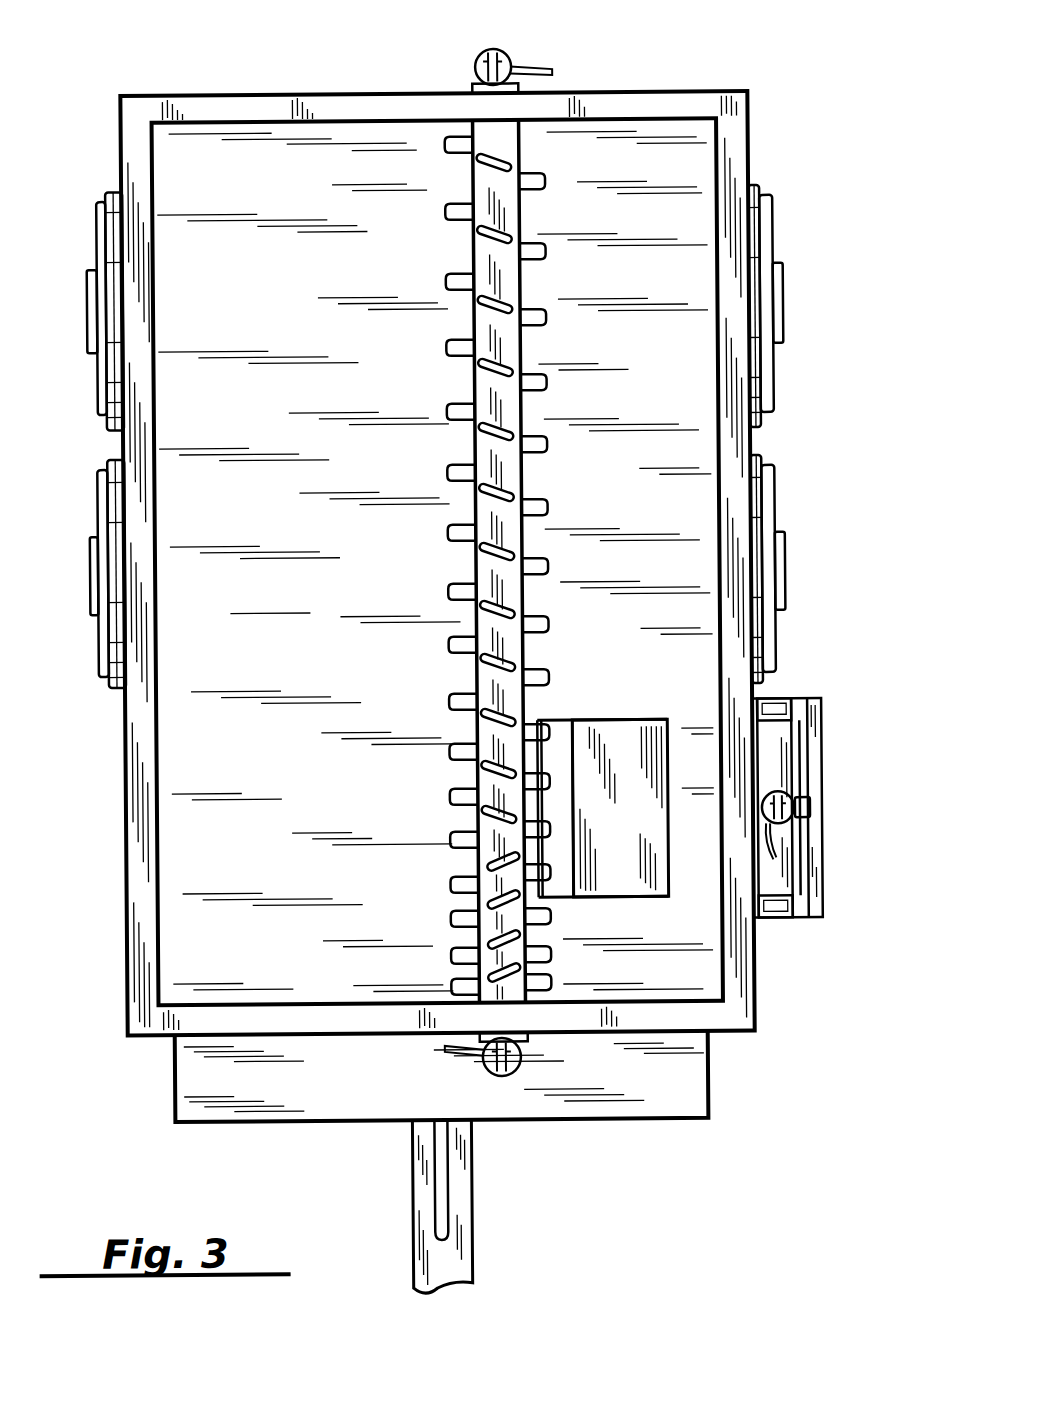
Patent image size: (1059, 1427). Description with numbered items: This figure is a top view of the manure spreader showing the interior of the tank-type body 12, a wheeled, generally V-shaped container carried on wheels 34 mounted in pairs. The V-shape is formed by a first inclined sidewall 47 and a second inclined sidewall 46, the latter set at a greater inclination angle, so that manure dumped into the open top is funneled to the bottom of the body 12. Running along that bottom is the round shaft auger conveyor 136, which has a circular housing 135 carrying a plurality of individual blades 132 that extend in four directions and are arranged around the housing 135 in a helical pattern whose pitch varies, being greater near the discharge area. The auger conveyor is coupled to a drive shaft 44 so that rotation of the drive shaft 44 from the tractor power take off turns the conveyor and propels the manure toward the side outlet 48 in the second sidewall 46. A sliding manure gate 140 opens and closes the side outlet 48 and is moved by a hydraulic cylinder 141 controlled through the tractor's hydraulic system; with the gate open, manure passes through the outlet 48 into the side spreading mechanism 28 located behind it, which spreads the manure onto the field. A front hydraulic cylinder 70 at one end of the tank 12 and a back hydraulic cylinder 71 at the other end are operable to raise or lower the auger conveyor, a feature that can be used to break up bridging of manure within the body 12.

The tank-type body 12 is at (716, 92).
The side spreading mechanism 28 is at (816, 684).
The wheels 34 is at (102, 211).
The drive shaft 44 is at (443, 1193).
The second inclined sidewall 46 is at (678, 298).
The first inclined sidewall 47 is at (286, 300).
The side outlet 48 is at (551, 753).
The front hydraulic cylinder 70 is at (508, 1074).
The back hydraulic cylinder 71 is at (512, 53).
The individual blades 132 is at (549, 381).
The circular housing 135 is at (515, 533).
The round shaft auger conveyor 136 is at (533, 213).
The sliding manure gate 140 is at (621, 741).
The hydraulic cylinder 141 is at (785, 799).